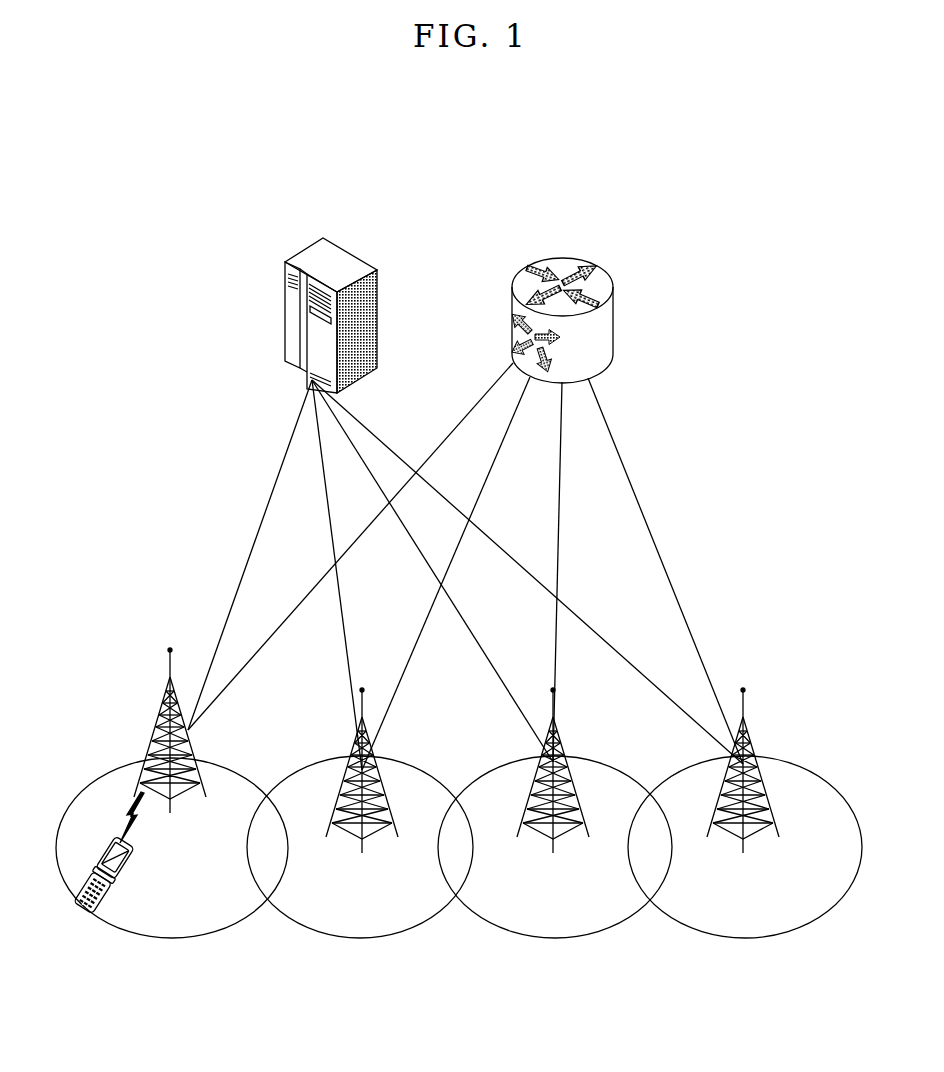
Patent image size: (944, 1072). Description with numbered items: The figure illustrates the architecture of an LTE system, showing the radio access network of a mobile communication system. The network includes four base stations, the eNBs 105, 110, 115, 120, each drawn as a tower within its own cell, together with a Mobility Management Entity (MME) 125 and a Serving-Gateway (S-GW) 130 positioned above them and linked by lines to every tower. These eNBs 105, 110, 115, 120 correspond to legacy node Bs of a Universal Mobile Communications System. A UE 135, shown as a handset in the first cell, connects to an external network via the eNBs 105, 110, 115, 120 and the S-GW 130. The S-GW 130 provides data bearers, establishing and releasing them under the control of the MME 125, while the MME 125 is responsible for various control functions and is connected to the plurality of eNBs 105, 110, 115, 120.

The eNB 105 is at (160, 710).
The eNB 110 is at (357, 732).
The eNB 115 is at (558, 732).
The eNB 120 is at (748, 732).
The Mobility Management Entity (MME) 125 is at (315, 258).
The Serving-Gateway (S-GW) 130 is at (558, 265).
The UE 135 is at (124, 872).